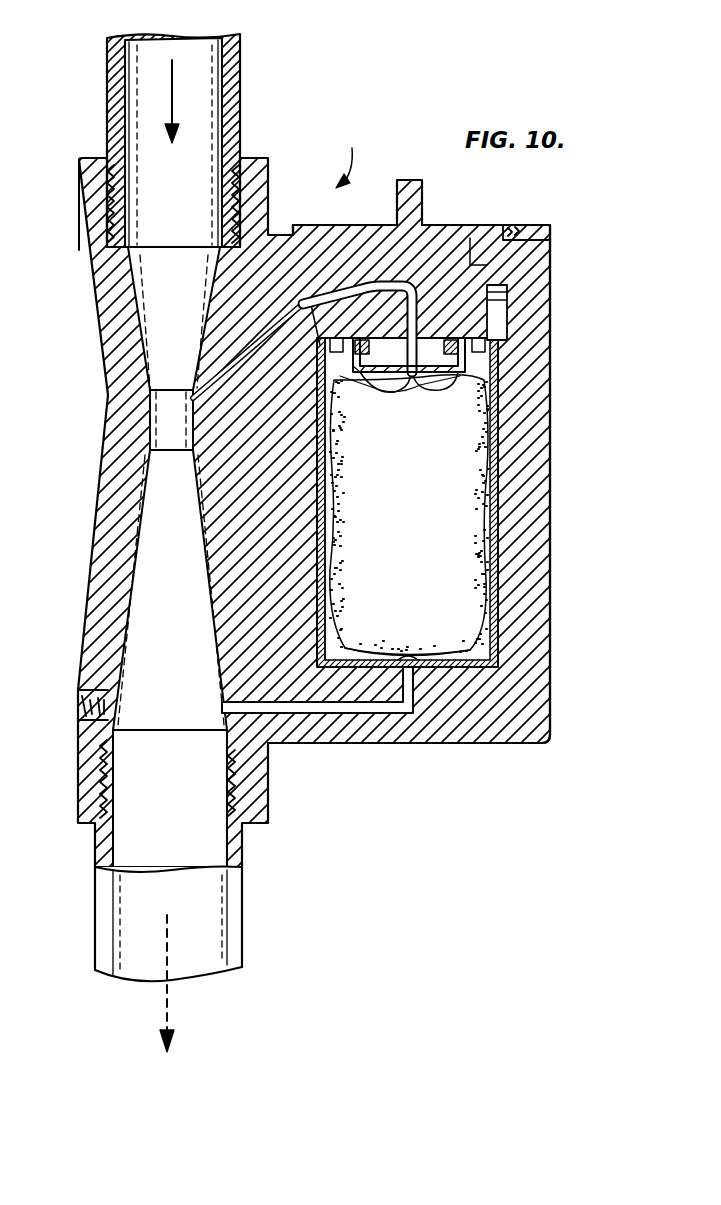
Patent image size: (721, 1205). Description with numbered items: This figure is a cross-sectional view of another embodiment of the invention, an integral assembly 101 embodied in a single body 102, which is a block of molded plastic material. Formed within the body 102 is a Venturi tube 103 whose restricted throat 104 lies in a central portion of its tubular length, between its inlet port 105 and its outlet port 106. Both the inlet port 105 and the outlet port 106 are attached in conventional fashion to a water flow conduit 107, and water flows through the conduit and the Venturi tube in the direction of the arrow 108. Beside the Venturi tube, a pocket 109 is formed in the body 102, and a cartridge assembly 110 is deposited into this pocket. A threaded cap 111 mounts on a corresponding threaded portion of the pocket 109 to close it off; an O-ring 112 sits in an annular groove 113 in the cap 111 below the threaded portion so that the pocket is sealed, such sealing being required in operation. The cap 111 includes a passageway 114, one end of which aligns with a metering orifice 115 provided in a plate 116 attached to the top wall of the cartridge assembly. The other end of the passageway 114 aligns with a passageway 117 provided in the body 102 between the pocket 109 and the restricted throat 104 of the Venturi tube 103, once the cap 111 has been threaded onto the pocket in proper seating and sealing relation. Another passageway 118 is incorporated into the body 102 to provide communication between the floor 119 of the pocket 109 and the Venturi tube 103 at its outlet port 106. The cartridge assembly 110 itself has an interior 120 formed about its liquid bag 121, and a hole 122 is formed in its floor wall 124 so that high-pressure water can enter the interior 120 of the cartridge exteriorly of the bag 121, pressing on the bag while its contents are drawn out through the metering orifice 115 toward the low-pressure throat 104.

The integral assembly 101 is at (357, 154).
The body 102 is at (530, 553).
The Venturi tube 103 is at (105, 636).
The restricted throat 104 is at (175, 430).
The inlet port 105 is at (100, 238).
The outlet port 106 is at (228, 740).
The water flow conduit 107 is at (237, 92).
The arrow 108 is at (170, 91).
The pocket 109 is at (307, 594).
The cartridge assembly 110 is at (513, 436).
The threaded cap 111 is at (483, 258).
The O-ring 112 is at (512, 293).
The annular groove 113 is at (503, 250).
The passageway 114 is at (416, 330).
The metering orifice 115 is at (424, 388).
The plate 116 is at (366, 388).
The passageway 117 is at (250, 375).
The passageway 118 is at (320, 705).
The floor 119 is at (523, 622).
The interior 120 is at (480, 372).
The liquid bag 121 is at (425, 560).
The hole 122 is at (415, 665).
The floor wall 124 is at (358, 660).